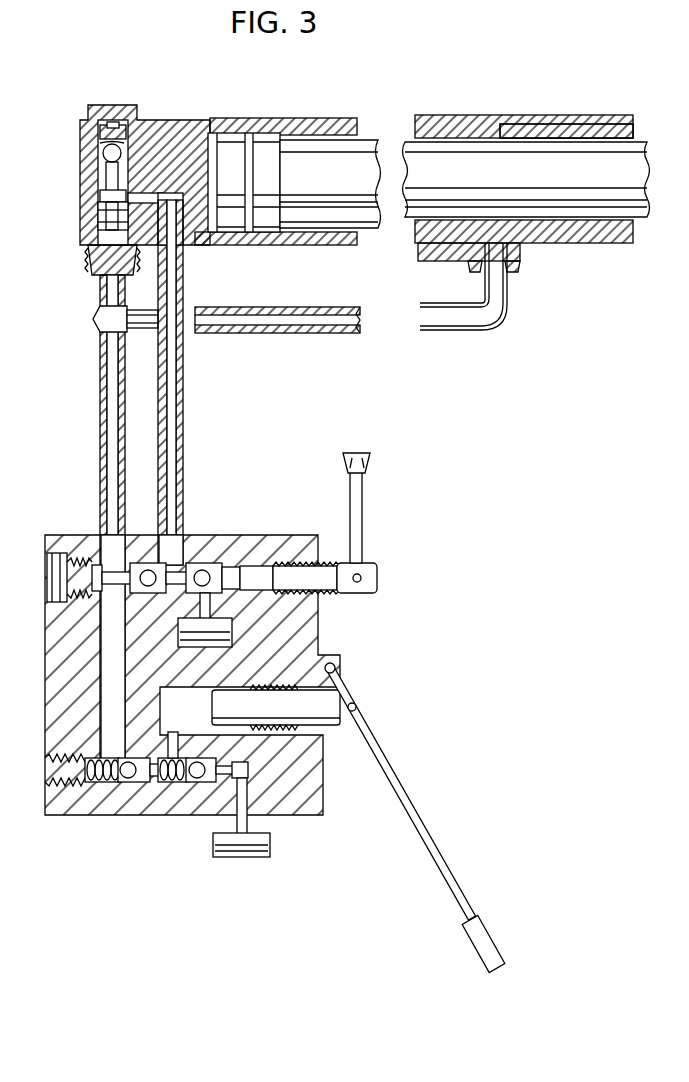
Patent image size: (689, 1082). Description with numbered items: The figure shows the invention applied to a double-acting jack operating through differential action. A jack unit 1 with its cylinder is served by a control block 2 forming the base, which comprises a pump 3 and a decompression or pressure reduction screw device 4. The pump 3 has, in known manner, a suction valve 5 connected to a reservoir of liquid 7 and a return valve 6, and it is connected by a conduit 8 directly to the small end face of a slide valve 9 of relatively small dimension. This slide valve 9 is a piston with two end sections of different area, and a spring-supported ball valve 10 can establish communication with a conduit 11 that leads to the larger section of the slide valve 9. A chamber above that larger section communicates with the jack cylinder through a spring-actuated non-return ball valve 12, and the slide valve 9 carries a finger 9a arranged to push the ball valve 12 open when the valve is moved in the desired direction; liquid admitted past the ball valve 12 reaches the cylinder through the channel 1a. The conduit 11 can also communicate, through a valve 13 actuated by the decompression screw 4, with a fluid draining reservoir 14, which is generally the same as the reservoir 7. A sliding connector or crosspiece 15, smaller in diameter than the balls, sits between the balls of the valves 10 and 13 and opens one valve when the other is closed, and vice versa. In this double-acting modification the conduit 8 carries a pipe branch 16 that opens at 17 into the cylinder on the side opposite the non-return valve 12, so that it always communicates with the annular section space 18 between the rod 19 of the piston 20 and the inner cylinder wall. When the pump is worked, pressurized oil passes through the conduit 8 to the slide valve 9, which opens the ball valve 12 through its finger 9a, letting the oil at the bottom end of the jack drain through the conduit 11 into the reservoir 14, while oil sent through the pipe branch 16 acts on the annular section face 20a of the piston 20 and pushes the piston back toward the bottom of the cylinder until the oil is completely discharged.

The jack unit 1 is at (320, 126).
The channel 1a is at (196, 125).
The control block 2 is at (72, 628).
The pump 3 is at (362, 703).
The decompression screw device 4 is at (304, 562).
The suction valve 5 is at (197, 782).
The return valve 6 is at (128, 782).
The reservoir of liquid 7 is at (257, 850).
The conduit 8 is at (100, 388).
The slide valve 9 is at (102, 222).
The finger 9a is at (108, 175).
The spring-supported ball valve 10 is at (148, 564).
The conduit 11 is at (175, 390).
The non-return ball valve 12 is at (110, 150).
The valve 13 is at (222, 566).
The fluid draining reservoir 14 is at (232, 637).
The sliding connector 15 is at (194, 564).
The pipe branch 16 is at (336, 322).
The opening 17 is at (500, 258).
The annular section space 18 is at (450, 228).
The rod 19 is at (450, 176).
The piston 20 is at (266, 152).
The annular section face 20a is at (294, 126).